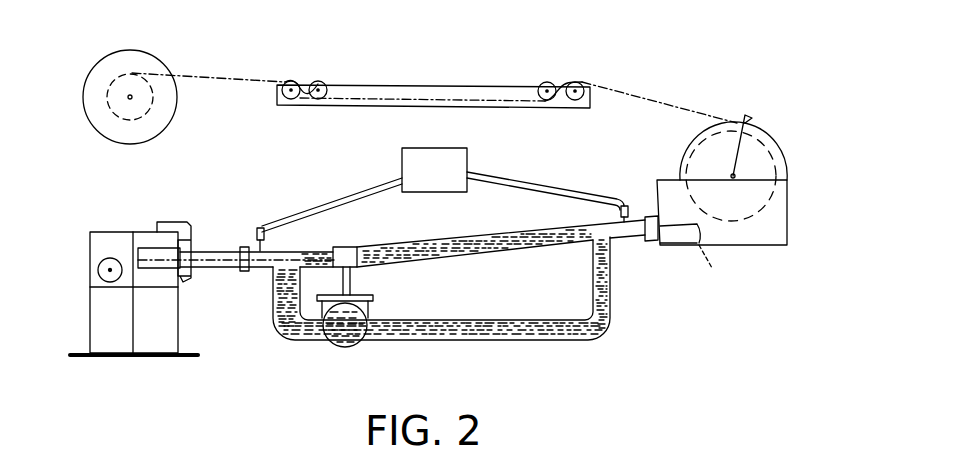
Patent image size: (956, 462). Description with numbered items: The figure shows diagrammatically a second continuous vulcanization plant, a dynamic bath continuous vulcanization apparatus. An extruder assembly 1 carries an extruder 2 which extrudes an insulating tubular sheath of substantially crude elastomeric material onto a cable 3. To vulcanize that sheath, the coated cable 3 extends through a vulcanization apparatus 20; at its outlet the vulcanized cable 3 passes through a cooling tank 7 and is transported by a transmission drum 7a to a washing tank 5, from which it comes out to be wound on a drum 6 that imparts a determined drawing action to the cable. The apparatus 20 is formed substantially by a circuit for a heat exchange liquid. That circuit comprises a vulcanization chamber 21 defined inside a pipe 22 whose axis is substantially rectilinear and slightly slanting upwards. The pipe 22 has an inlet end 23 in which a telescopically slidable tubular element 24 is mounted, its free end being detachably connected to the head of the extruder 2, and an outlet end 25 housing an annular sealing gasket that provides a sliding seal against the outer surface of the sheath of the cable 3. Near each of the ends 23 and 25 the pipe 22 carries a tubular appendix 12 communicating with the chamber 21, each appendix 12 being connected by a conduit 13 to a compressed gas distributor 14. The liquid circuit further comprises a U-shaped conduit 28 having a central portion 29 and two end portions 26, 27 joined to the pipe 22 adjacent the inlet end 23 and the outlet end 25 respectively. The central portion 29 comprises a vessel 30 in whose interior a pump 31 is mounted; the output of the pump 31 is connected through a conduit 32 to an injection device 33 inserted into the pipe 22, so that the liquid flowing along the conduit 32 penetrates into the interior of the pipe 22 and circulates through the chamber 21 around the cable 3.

The extruder assembly 1 is at (77, 243).
The extruder 2 is at (148, 251).
The cable 3 is at (240, 78).
The washing tank 5 is at (432, 93).
The drum 6 is at (158, 118).
The cooling tank 7 is at (776, 218).
The transmission drum 7a is at (717, 138).
The tubular appendix 12 is at (266, 243).
The conduit 13 is at (340, 200).
The compressed gas distributor 14 is at (456, 162).
The vulcanization apparatus 20 is at (620, 308).
The vulcanization chamber 21 is at (465, 258).
The pipe 22 is at (460, 241).
The inlet end 23 is at (243, 248).
The tubular element 24 is at (212, 247).
The outlet end 25 is at (650, 215).
The end portion 26 is at (282, 298).
The end portion 27 is at (612, 268).
The U-shaped conduit 28 is at (539, 343).
The central portion 29 is at (542, 330).
The vessel 30 is at (325, 345).
The pump 31 is at (372, 310).
The conduit 32 is at (352, 280).
The injection device 33 is at (345, 251).